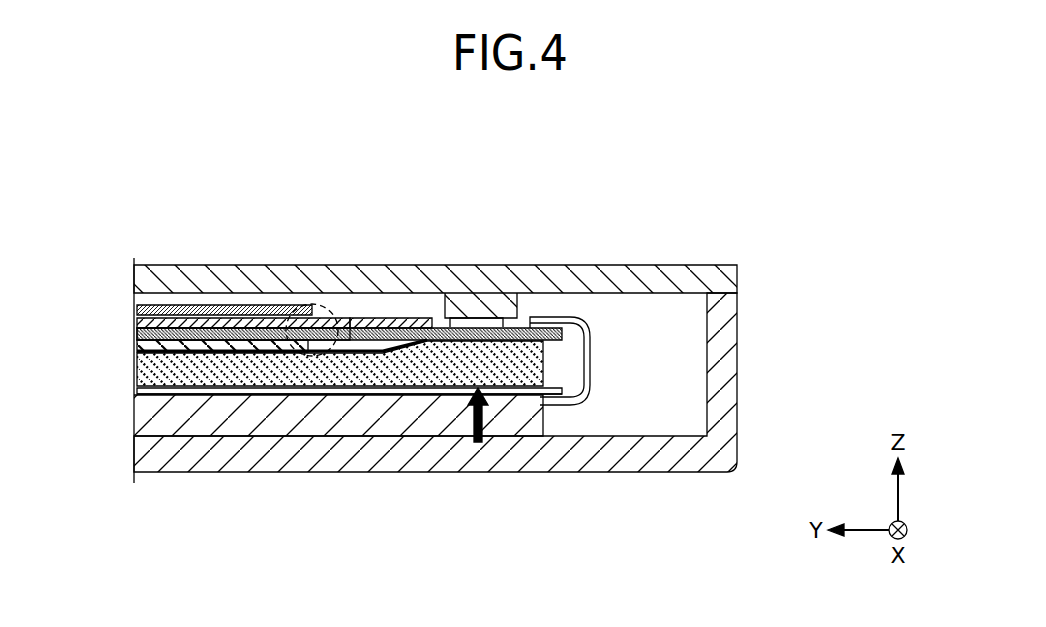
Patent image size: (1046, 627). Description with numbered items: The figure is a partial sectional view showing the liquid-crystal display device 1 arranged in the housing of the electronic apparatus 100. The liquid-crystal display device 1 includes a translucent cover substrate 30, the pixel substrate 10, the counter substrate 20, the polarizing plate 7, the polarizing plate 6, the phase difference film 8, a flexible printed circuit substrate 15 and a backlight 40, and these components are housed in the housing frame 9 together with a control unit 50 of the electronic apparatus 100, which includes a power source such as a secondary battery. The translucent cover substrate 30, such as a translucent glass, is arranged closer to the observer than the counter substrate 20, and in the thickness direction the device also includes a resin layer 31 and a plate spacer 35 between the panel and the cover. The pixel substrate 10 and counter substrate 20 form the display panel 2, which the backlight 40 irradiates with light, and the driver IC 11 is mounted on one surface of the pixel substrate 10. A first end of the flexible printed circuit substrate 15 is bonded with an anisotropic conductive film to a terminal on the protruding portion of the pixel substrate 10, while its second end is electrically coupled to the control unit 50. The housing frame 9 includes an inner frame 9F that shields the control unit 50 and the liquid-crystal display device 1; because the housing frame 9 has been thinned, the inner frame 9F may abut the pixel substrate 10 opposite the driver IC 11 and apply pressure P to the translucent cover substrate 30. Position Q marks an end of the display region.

The electronic apparatus 100 is at (640, 226).
The liquid-crystal display device 1 is at (158, 264).
The display panel 2 is at (442, 205).
The polarizing plate 6 is at (168, 396).
The polarizing plate 7 is at (184, 305).
The phase difference film 8 is at (205, 352).
The housing frame 9 is at (563, 460).
The inner frame 9F is at (512, 397).
The pixel substrate 10 is at (418, 328).
The driver IC 11 is at (503, 318).
The flexible printed circuit substrate 15 is at (580, 399).
The counter substrate 20 is at (372, 318).
The translucent cover substrate 30 is at (279, 328).
The resin layer 31 is at (230, 318).
The plate spacer 35 is at (477, 300).
The backlight 40 is at (247, 372).
The control unit 50 is at (297, 430).
The pressure P is at (462, 428).
The position indicating an end of the display region Q is at (327, 356).